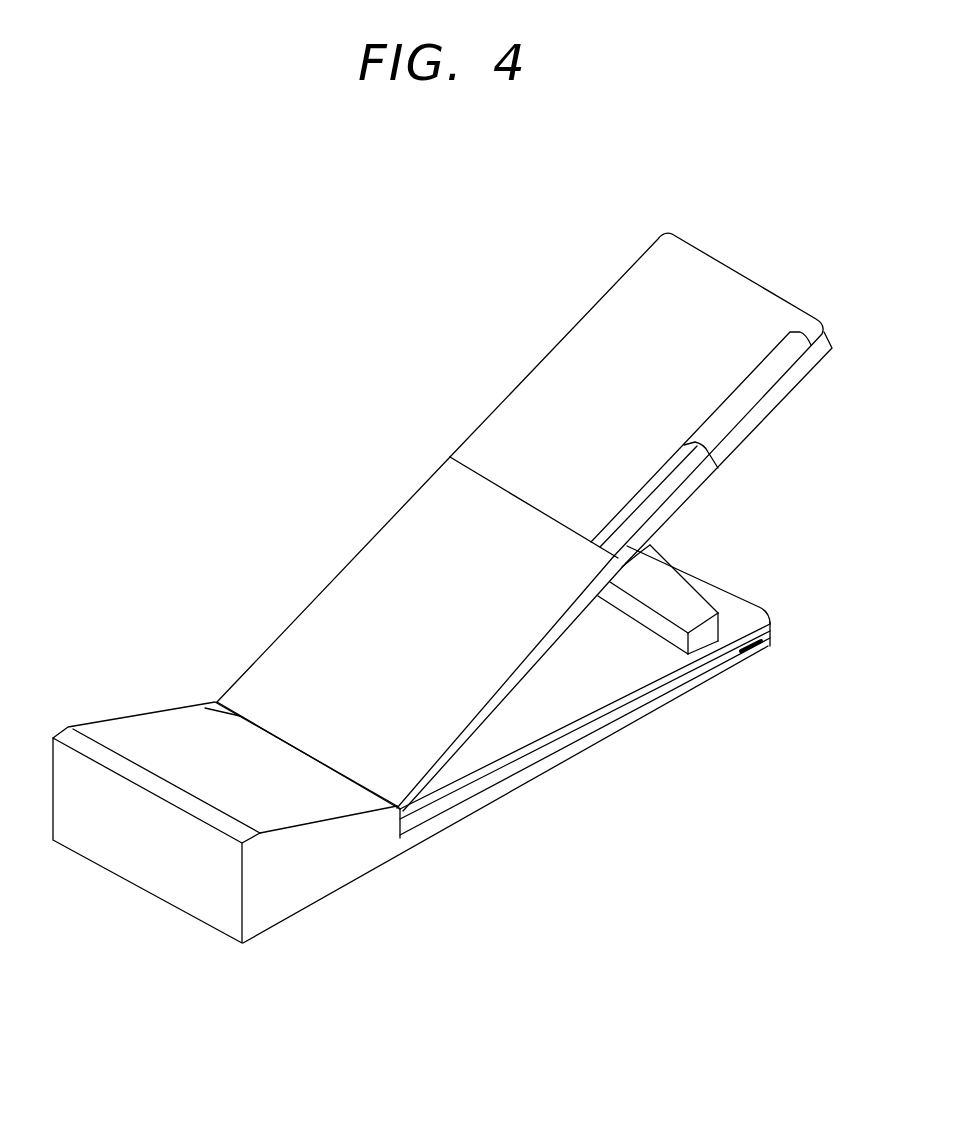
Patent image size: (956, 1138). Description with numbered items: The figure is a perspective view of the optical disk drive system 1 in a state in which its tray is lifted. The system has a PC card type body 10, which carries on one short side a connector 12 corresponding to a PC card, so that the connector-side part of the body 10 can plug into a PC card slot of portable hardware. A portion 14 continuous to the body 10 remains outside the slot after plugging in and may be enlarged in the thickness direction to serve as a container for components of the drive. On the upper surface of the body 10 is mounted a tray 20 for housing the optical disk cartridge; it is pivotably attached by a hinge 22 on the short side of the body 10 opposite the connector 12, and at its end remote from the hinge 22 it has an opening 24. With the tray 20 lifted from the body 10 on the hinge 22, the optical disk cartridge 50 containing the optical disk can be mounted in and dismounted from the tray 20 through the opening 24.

The optical disk drive system 1 is at (403, 288).
The body 10 is at (541, 764).
The connector 12 is at (766, 641).
The portion 14 is at (330, 880).
The tray 20 is at (323, 617).
The hinge 22 is at (233, 707).
The opening 24 is at (648, 546).
The optical disk cartridge 50 is at (528, 393).